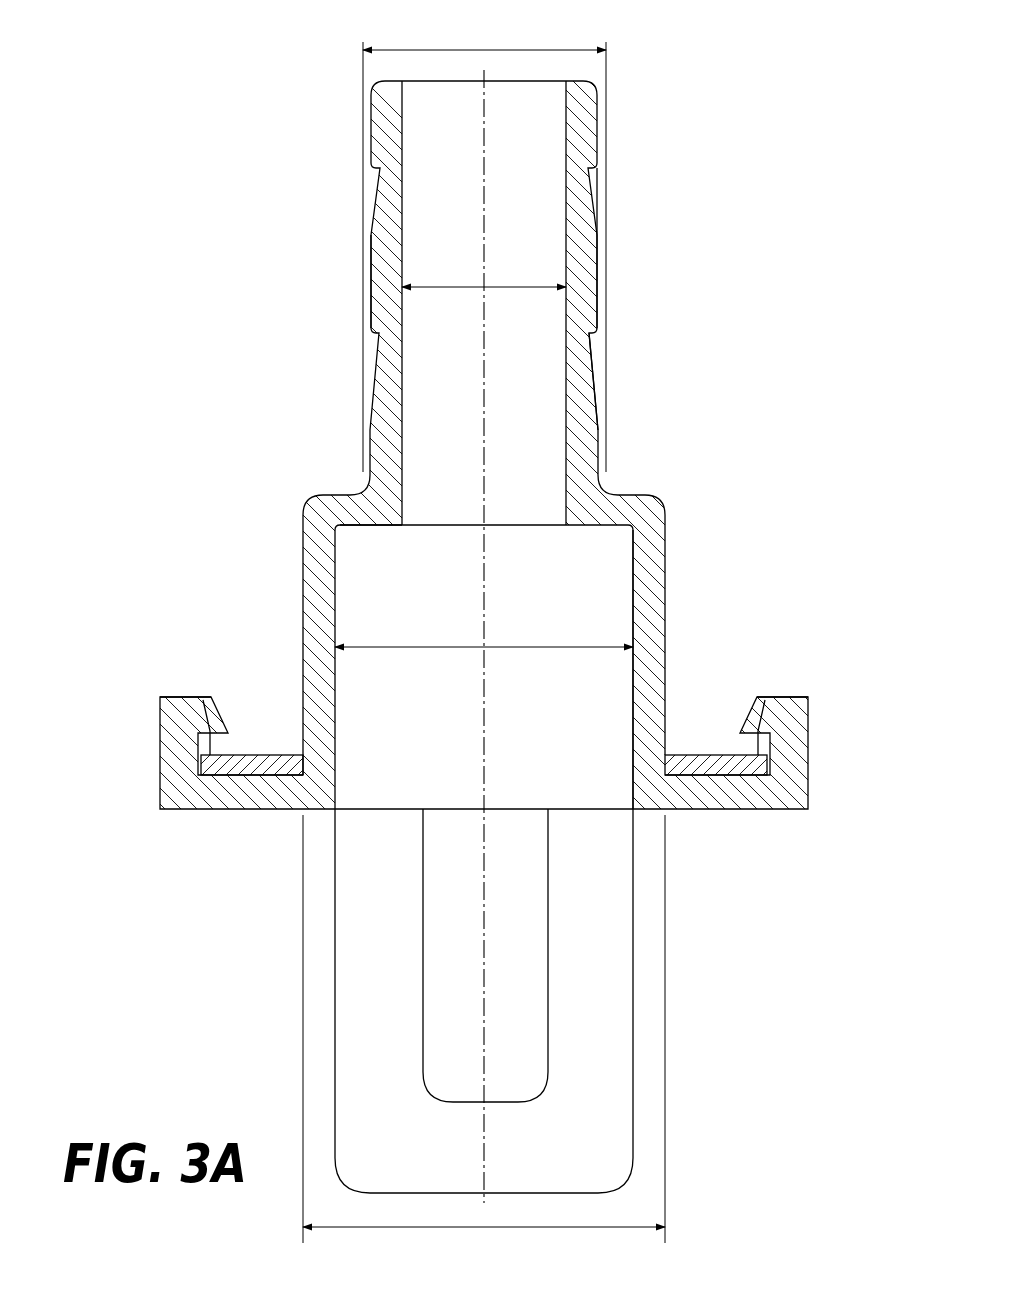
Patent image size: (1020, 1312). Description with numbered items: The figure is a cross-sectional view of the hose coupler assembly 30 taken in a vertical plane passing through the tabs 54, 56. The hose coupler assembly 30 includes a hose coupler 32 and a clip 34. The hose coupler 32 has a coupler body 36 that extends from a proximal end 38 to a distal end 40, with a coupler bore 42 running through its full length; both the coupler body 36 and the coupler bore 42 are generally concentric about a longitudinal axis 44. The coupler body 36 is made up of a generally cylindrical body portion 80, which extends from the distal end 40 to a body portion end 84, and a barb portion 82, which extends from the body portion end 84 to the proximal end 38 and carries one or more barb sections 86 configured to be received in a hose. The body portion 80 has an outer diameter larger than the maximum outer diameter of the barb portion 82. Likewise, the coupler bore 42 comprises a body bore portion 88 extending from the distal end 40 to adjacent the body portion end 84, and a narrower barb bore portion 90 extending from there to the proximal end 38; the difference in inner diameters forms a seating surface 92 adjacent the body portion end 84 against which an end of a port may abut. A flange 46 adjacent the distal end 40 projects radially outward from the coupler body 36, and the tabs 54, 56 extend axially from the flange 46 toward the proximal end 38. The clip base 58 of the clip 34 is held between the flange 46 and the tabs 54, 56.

The hose coupler assembly 30 is at (510, 632).
The hose coupler 32 is at (618, 358).
The clip 34 is at (534, 1001).
The coupler body 36 is at (69, 95).
The proximal end 38 is at (483, 289).
The distal end 40 is at (448, 812).
The coupler bore 42 is at (540, 80).
The longitudinal axis 44 is at (484, 80).
The flange 46 is at (213, 795).
The tab 54 is at (133, 780).
The tab 56 is at (828, 780).
The clip base 58 is at (240, 766).
The body portion 80 is at (652, 696).
The barb portion 82 is at (375, 298).
The body portion end 84 is at (668, 492).
The barb section 86 is at (627, 165).
The body bore portion 88 is at (592, 588).
The barb bore portion 90 is at (538, 200).
The seating surface 92 is at (368, 527).